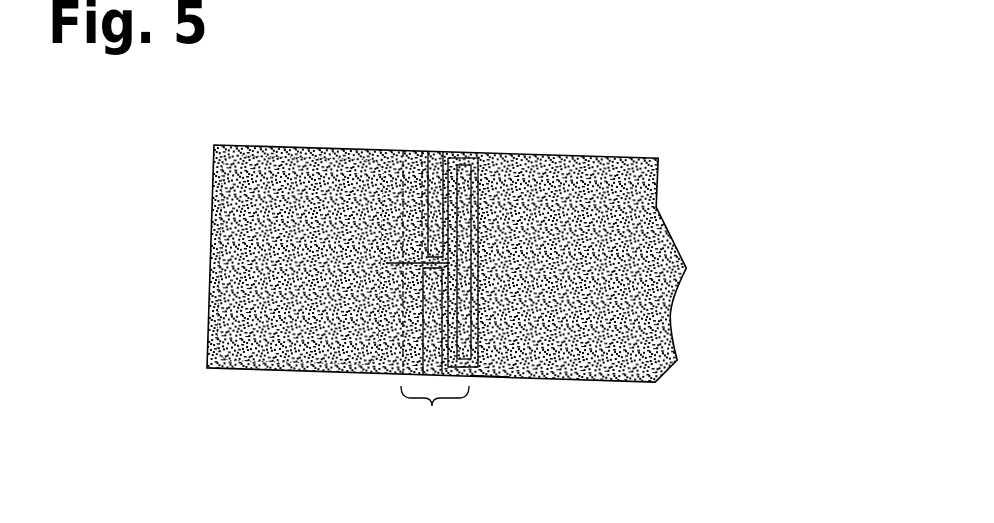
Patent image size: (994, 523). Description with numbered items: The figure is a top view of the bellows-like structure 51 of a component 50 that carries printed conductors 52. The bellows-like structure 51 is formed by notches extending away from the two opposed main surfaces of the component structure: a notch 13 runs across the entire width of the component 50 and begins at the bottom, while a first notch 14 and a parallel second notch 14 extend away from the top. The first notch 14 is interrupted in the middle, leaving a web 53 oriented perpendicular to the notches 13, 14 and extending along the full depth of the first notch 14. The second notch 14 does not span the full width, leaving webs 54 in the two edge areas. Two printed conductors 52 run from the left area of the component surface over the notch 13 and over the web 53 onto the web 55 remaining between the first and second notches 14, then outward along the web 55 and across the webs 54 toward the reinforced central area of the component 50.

The component 50 is at (713, 237).
The notch 13 is at (412, 164).
The notch 14 is at (478, 176).
The bellows-like structure 51 is at (432, 405).
The printed conductors 52 is at (490, 374).
The web 53 is at (425, 268).
The webs 54 is at (468, 162).
The web 55 is at (452, 375).